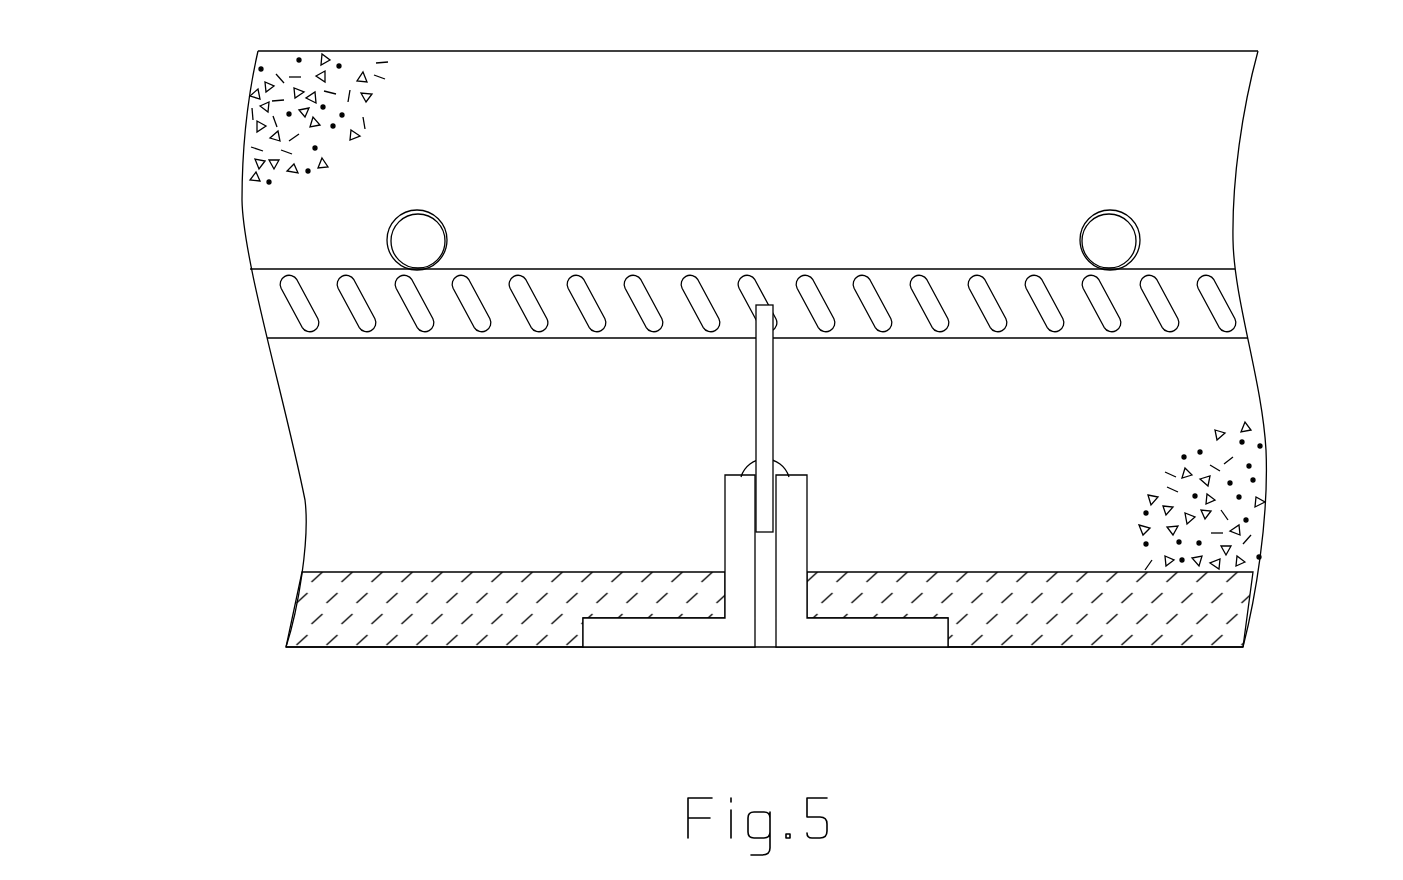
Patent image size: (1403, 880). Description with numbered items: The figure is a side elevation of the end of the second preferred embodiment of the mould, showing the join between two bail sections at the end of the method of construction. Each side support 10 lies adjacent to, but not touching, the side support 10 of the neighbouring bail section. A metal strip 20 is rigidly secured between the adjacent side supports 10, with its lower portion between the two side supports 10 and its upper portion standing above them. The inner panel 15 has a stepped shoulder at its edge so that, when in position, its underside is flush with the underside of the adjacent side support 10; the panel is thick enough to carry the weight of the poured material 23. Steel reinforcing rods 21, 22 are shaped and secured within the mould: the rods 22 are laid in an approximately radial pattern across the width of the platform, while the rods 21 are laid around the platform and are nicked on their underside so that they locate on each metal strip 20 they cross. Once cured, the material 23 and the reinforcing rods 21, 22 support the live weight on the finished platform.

The side support 10 is at (697, 637).
The inner panel 15 is at (457, 612).
The metal strip 20 is at (778, 436).
The reinforcing rod 21 is at (1183, 307).
The reinforcing rod 22 is at (425, 235).
The material 23 is at (754, 349).